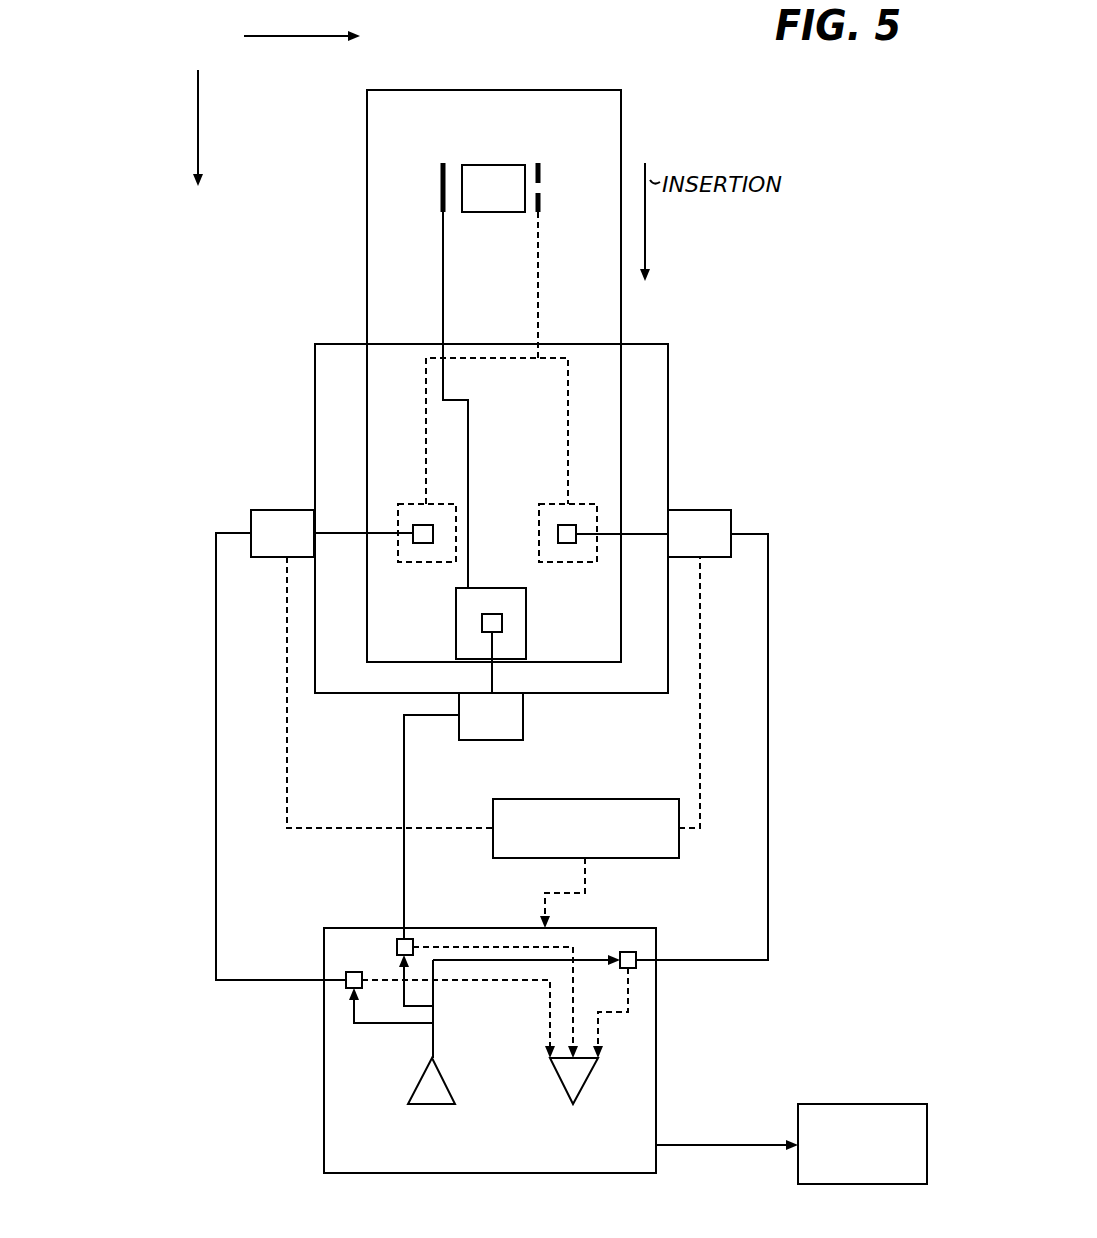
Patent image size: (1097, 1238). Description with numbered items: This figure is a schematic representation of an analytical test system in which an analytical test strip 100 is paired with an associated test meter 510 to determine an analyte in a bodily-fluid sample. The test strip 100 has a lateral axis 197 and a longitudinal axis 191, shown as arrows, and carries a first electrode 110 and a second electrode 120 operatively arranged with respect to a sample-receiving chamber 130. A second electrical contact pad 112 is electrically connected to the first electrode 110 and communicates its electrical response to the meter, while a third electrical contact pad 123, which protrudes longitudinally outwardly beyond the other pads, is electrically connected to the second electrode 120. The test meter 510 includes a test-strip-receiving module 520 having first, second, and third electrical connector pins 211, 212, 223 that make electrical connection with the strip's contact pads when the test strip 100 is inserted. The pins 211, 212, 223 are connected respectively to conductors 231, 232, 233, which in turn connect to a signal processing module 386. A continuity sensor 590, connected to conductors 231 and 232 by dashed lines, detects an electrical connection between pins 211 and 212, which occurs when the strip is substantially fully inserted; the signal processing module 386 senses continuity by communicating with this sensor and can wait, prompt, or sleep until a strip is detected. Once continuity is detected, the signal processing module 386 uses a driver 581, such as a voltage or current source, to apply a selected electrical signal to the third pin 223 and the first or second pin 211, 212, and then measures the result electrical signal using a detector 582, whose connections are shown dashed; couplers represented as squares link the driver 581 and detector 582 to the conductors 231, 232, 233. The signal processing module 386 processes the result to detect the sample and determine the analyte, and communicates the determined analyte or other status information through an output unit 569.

The analytical test strip 100 is at (495, 90).
The first electrode 110 is at (545, 198).
The second electrical contact pad 112 is at (398, 504).
The second electrode 120 is at (442, 200).
The third electrical contact pad 123 is at (492, 588).
The sample-receiving chamber 130 is at (494, 212).
The longitudinal axis 191 is at (196, 94).
The lateral axis 197 is at (266, 38).
The first electrical connector pin 211 is at (568, 543).
The second electrical connector pin 212 is at (423, 543).
The third electrical connector pin 223 is at (502, 623).
The electrical conductor 231 is at (700, 510).
The electrical conductor 232 is at (283, 510).
The electrical conductor 233 is at (523, 715).
The signal processing module 386 is at (449, 1065).
The test meter 510 is at (146, 582).
The test-strip-receiving module 520 is at (315, 355).
The output unit 569 is at (798, 1118).
The driver 581 is at (420, 1082).
The detector 582 is at (562, 1082).
The continuity sensor 590 is at (493, 813).